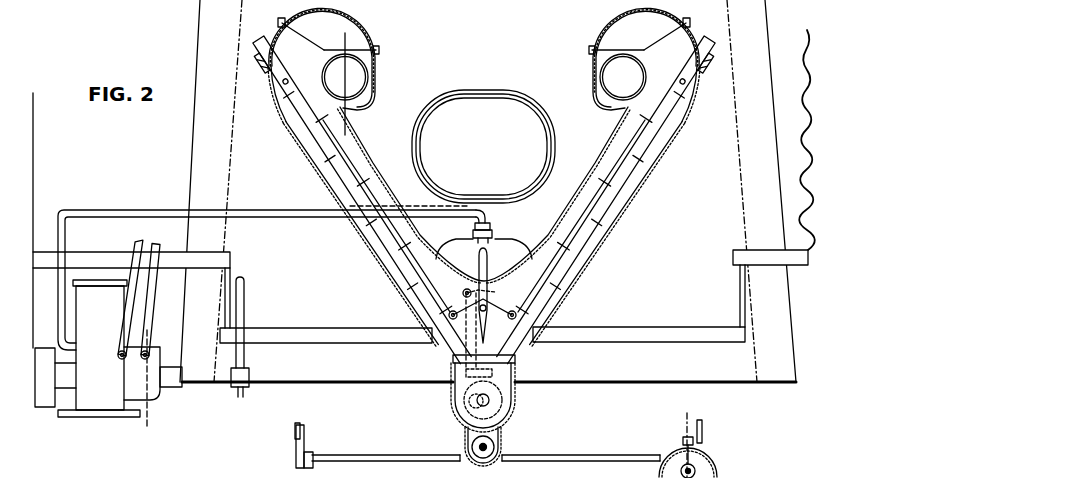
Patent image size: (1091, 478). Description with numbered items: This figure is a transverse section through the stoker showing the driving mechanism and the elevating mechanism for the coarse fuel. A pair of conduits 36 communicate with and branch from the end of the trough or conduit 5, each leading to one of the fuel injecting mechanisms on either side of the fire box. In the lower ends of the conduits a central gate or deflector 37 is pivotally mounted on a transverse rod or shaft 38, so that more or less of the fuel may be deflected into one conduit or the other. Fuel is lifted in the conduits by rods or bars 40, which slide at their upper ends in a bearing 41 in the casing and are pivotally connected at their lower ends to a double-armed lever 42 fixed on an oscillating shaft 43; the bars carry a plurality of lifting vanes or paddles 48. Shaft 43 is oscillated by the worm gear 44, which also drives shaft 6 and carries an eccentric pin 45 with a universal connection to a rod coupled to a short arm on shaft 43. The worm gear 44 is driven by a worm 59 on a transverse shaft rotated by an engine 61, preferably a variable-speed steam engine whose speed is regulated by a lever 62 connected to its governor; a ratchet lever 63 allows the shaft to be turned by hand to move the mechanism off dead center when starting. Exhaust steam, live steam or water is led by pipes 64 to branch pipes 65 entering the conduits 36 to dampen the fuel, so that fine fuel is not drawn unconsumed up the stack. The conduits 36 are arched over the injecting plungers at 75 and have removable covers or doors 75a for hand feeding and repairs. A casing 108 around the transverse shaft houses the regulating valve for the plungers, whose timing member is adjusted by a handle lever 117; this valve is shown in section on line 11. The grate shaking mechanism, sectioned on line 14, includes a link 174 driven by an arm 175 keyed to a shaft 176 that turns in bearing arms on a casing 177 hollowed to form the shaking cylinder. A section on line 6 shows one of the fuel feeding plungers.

The trough or conduit 5 is at (503, 402).
The shaft 6 is at (344, 34).
The section line 11- 11 is at (149, 334).
The section line 14- 14 is at (687, 413).
The conduits 36 is at (368, 229).
The central gate or deflector 37 is at (484, 327).
The transverse rod or shaft 38 is at (488, 300).
The rods or bars 40 is at (568, 257).
The bearing 41 is at (261, 58).
The double-armed lever 42 is at (455, 308).
The oscillating shaft 43 is at (488, 302).
The worm gear 44 is at (488, 403).
The eccentric pin 45 is at (473, 404).
The lifting vanes or paddles 48 is at (384, 200).
The worm 59 is at (458, 390).
The engine 61 is at (87, 348).
The lever or controlling member 62 is at (136, 245).
The ratchet lever 63 is at (244, 316).
The pipes or conduits 64 is at (283, 205).
The branch pipes 65 is at (515, 238).
The arched overhanging portions 75 is at (290, 45).
The removable covers or doors 75a is at (372, 36).
The casing 108 is at (152, 388).
The handle lever 117 is at (156, 246).
The link 174 is at (297, 425).
The arm 175 is at (306, 446).
The shaft 176 is at (567, 455).
The casing 177 is at (714, 460).